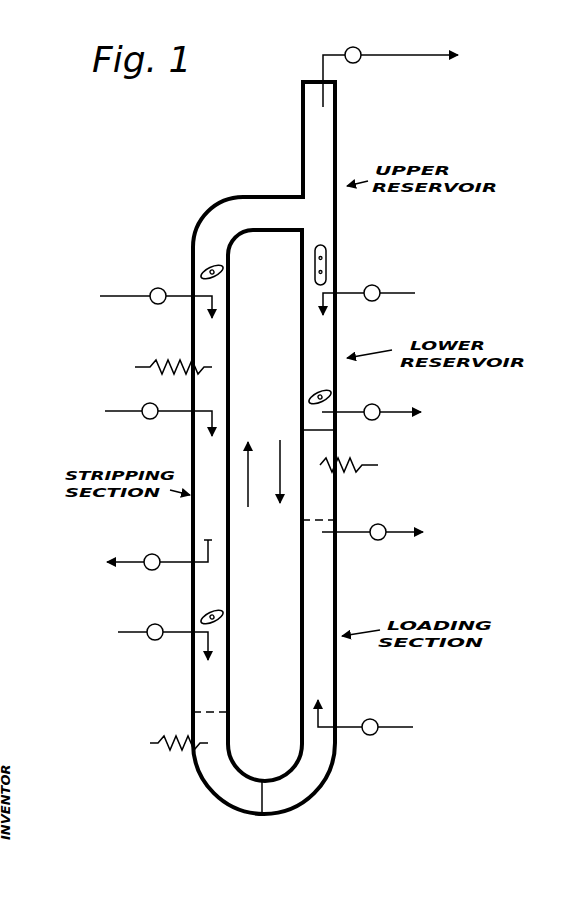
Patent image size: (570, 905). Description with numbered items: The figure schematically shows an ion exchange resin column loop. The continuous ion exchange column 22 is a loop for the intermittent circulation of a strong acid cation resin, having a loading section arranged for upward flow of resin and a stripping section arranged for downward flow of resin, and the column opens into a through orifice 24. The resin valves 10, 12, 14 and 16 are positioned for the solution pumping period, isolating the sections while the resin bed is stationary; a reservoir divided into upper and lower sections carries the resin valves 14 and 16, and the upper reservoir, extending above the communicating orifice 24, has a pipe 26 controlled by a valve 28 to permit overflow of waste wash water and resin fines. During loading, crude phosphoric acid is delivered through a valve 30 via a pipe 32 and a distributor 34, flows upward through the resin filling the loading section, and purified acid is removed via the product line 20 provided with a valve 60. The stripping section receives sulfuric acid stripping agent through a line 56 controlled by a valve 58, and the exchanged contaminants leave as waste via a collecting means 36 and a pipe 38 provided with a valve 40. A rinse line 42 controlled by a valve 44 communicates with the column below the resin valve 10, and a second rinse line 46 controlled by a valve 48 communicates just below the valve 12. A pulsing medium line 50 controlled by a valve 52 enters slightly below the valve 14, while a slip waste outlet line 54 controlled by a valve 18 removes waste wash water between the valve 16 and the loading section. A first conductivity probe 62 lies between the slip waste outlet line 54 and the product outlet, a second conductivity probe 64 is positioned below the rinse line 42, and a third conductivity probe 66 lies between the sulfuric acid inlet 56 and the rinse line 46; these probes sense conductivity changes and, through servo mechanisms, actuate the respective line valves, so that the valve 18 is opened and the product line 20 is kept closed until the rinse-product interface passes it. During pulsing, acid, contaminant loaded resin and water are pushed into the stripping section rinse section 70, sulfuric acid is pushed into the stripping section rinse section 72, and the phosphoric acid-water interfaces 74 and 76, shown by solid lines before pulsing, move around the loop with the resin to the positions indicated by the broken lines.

The resin valve 10 is at (224, 621).
The resin valve 12 is at (224, 276).
The resin valve 14 is at (326, 250).
The resin valve 16 is at (330, 392).
The valve 18 is at (378, 418).
The product line 20 is at (380, 540).
The column 22 is at (222, 195).
The through orifice 24 is at (320, 222).
The pipe 26 is at (322, 62).
The valve 28 is at (359, 61).
The valve 30 is at (376, 724).
The pipe 32 is at (386, 730).
The distributor 34 is at (320, 700).
The collecting means 36 is at (228, 546).
The pipe 38 is at (130, 562).
The valve 40 is at (166, 550).
The rinse line 42 is at (178, 636).
The valve 44 is at (160, 625).
The second rinse line 46 is at (184, 294).
The valve 48 is at (152, 290).
The pulsing medium line 50 is at (408, 292).
The valve 52 is at (378, 287).
The slip waste outlet line 54 is at (384, 414).
The stripping agent line 56 is at (184, 412).
The valve 58 is at (146, 405).
The valve 60 is at (388, 532).
The first conductivity probe 62 is at (378, 465).
The second conductivity probe 64 is at (162, 748).
The third conductivity probe 66 is at (180, 362).
The stripping section rinse section 70 is at (205, 775).
The stripping section rinse section 72 is at (225, 327).
The phosphoric acid-water interface 74 is at (325, 432).
The phosphoric acid-water interface 76 is at (265, 800).